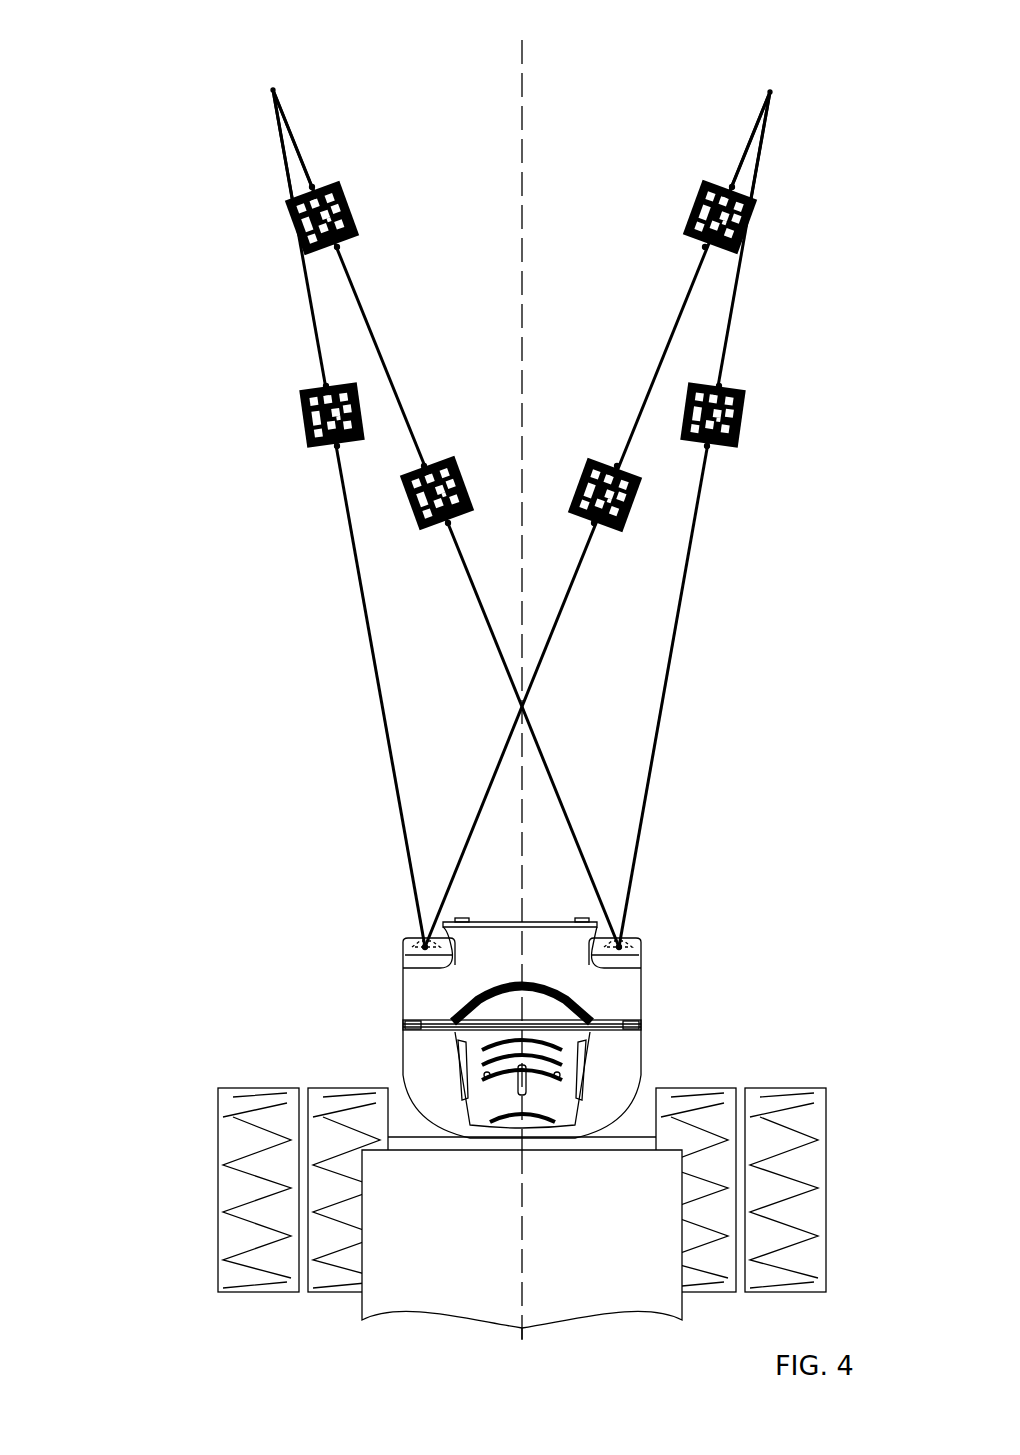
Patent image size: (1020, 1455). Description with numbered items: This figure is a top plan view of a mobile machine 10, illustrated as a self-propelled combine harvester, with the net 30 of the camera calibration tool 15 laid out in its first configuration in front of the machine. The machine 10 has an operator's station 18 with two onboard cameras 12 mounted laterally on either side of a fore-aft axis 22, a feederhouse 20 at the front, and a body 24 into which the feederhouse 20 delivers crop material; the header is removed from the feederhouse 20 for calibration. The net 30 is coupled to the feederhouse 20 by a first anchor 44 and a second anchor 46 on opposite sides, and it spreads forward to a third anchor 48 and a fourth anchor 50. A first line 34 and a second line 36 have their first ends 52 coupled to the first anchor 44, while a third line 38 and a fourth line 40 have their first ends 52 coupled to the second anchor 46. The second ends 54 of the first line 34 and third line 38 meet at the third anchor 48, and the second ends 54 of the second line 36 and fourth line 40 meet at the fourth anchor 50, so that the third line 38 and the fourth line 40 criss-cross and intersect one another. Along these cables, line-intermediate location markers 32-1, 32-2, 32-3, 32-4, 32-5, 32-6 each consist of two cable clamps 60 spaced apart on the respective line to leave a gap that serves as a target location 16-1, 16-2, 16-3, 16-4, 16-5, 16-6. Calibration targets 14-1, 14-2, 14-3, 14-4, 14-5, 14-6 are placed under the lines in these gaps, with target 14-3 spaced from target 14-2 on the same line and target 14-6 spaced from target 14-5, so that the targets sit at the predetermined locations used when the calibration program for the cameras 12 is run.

The mobile machine 10 is at (185, 1212).
The camera 12 is at (410, 940).
The target 14-1 is at (305, 393).
The target 14-2 is at (425, 468).
The target 14-3 is at (293, 205).
The target 14-4 is at (740, 393).
The target 14-5 is at (613, 468).
The target 14-6 is at (750, 205).
The camera calibration tool 15 is at (215, 522).
The target location 16-1 is at (305, 420).
The target location 16-2 is at (468, 472).
The target location 16-3 is at (302, 235).
The target location 16-4 is at (740, 420).
The target location 16-5 is at (594, 472).
The target location 16-6 is at (745, 235).
The operator's station 18 is at (445, 1000).
The feederhouse 20 is at (420, 965).
The fore-aft axis 22 is at (522, 1217).
The body 24 is at (630, 1248).
The net 30 is at (245, 625).
The line-intermediate location marker 32-1 is at (354, 361).
The line-intermediate location marker 32-2 is at (361, 476).
The line-intermediate location marker 32-3 is at (332, 204).
The line-intermediate location marker 32-4 is at (696, 361).
The line-intermediate location marker 32-5 is at (686, 476).
The line-intermediate location marker 32-6 is at (718, 204).
The first line 34 is at (386, 740).
The second line 36 is at (500, 762).
The third line 38 is at (545, 760).
The fourth line 40 is at (656, 735).
The first anchor 44 is at (408, 948).
The second anchor 46 is at (636, 948).
The third anchor 48 is at (273, 88).
The fourth anchor 50 is at (770, 90).
The first end 52 is at (425, 940).
The second end 54 is at (292, 135).
The cable clamp 60 is at (312, 187).